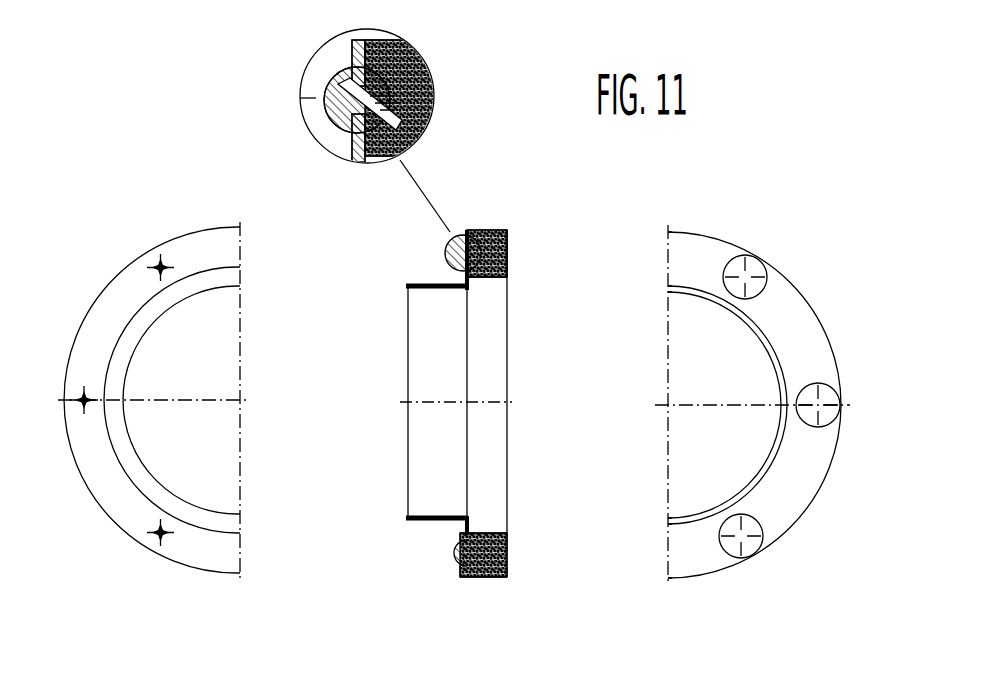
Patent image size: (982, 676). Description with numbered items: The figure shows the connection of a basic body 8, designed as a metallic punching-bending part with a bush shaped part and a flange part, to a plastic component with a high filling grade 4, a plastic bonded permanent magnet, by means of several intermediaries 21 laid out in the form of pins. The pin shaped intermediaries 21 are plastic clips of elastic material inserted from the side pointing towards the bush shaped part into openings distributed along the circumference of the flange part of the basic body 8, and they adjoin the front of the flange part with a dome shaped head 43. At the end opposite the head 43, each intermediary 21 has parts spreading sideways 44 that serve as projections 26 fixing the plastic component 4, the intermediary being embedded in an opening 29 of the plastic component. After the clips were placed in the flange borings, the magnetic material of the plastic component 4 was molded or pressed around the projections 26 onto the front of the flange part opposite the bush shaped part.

The plastic component with a high filling grade 4 is at (192, 258).
The basic body 8 is at (180, 306).
The intermediary 21 is at (322, 88).
The projection 26 is at (160, 262).
The opening 29 is at (508, 268).
The dome shaped head 43 is at (340, 116).
The parts spreading sideways 44 is at (380, 90).